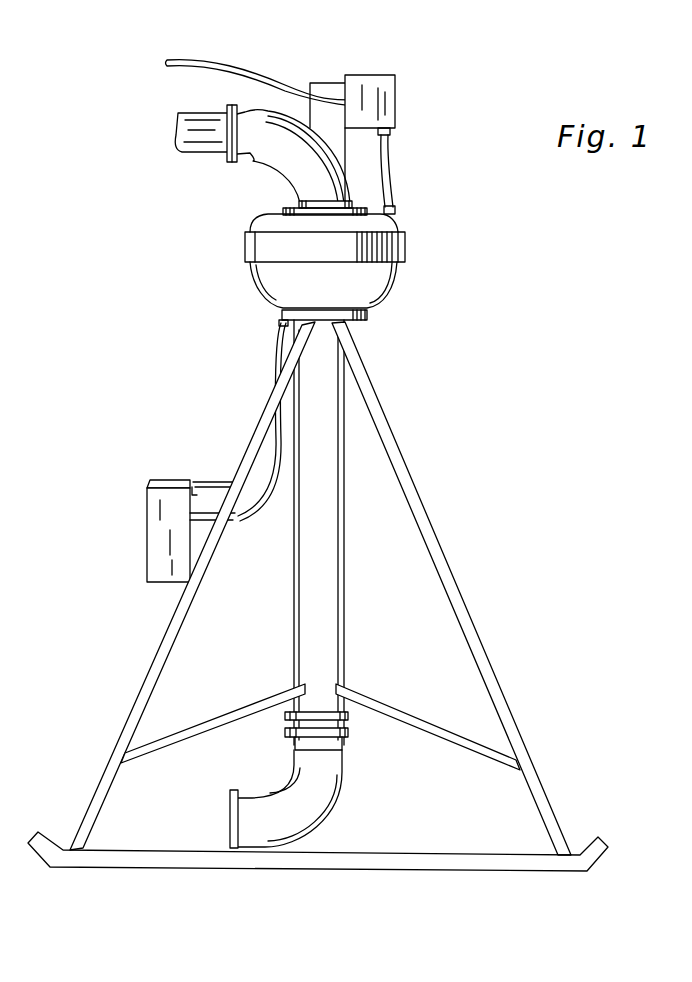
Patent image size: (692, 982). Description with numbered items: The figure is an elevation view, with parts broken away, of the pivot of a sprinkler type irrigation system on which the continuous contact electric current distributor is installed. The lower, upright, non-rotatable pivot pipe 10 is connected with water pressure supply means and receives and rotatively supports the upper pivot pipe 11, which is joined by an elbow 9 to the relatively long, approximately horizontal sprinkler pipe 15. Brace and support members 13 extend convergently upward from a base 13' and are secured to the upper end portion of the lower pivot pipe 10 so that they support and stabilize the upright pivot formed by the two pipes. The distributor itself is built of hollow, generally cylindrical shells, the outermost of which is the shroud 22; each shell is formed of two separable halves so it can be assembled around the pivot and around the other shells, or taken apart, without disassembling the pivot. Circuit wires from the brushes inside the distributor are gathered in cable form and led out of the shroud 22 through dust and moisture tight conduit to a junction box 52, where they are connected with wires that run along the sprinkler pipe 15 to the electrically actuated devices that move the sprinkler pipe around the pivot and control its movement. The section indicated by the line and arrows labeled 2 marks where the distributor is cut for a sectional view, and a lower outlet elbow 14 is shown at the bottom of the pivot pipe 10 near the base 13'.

The elbow 9 is at (267, 115).
The sprinkler pipe 15 is at (187, 110).
The junction box 52 is at (392, 90).
The shroud 22 is at (388, 295).
The section line 2- 2 is at (228, 233).
The lower pivot pipe 10 is at (342, 575).
The brace and support members 13 is at (320, 588).
The outlet elbow 14 is at (338, 792).
The base 13' is at (318, 843).
The upper pivot pipe 11 is at (2, 345).